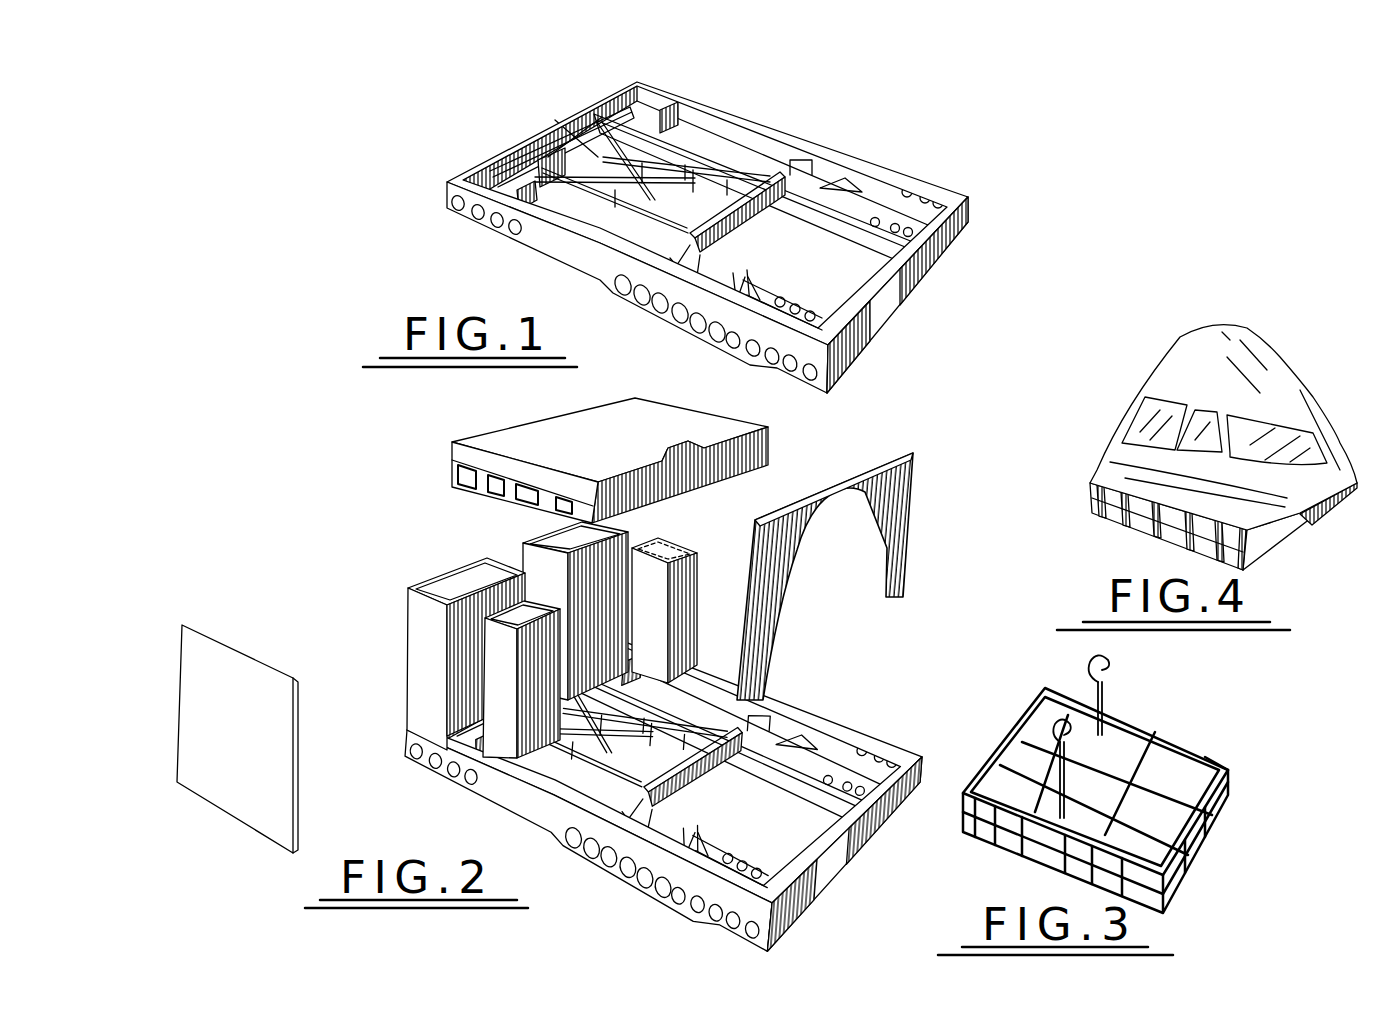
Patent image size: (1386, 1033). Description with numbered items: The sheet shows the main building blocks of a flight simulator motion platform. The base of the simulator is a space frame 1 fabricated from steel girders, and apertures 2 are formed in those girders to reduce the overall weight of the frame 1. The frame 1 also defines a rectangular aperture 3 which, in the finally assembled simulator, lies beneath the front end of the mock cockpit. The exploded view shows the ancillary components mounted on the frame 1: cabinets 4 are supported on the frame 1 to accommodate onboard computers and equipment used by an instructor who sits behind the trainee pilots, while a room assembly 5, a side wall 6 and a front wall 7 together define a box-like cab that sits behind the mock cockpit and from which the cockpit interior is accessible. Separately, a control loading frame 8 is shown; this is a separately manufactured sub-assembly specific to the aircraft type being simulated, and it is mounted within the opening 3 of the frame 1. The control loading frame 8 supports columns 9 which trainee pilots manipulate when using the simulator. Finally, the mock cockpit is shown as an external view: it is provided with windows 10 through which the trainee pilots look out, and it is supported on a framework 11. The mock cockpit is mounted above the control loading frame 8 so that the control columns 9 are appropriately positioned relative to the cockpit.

In FIG. 1, the space frame 1 is at (455, 156).
In FIG. 2, the space frame 1 is at (412, 786).
In FIG. 1, the apertures 2 is at (450, 211).
In FIG. 1, the rectangular aperture 3 is at (866, 283).
In FIG. 2, the rectangular aperture 3 is at (810, 829).
In FIG. 2, the cabinets 4 is at (563, 538).
In FIG. 2, the room assembly 5 is at (590, 435).
In FIG. 2, the side wall 6 is at (262, 750).
In FIG. 2, the front wall 7 is at (905, 563).
In FIG. 3, the control loading frame 8 is at (1013, 752).
In FIG. 3, the columns 9 is at (1050, 690).
In FIG. 4, the windows 10 is at (1140, 398).
In FIG. 4, the framework 11 is at (1265, 545).